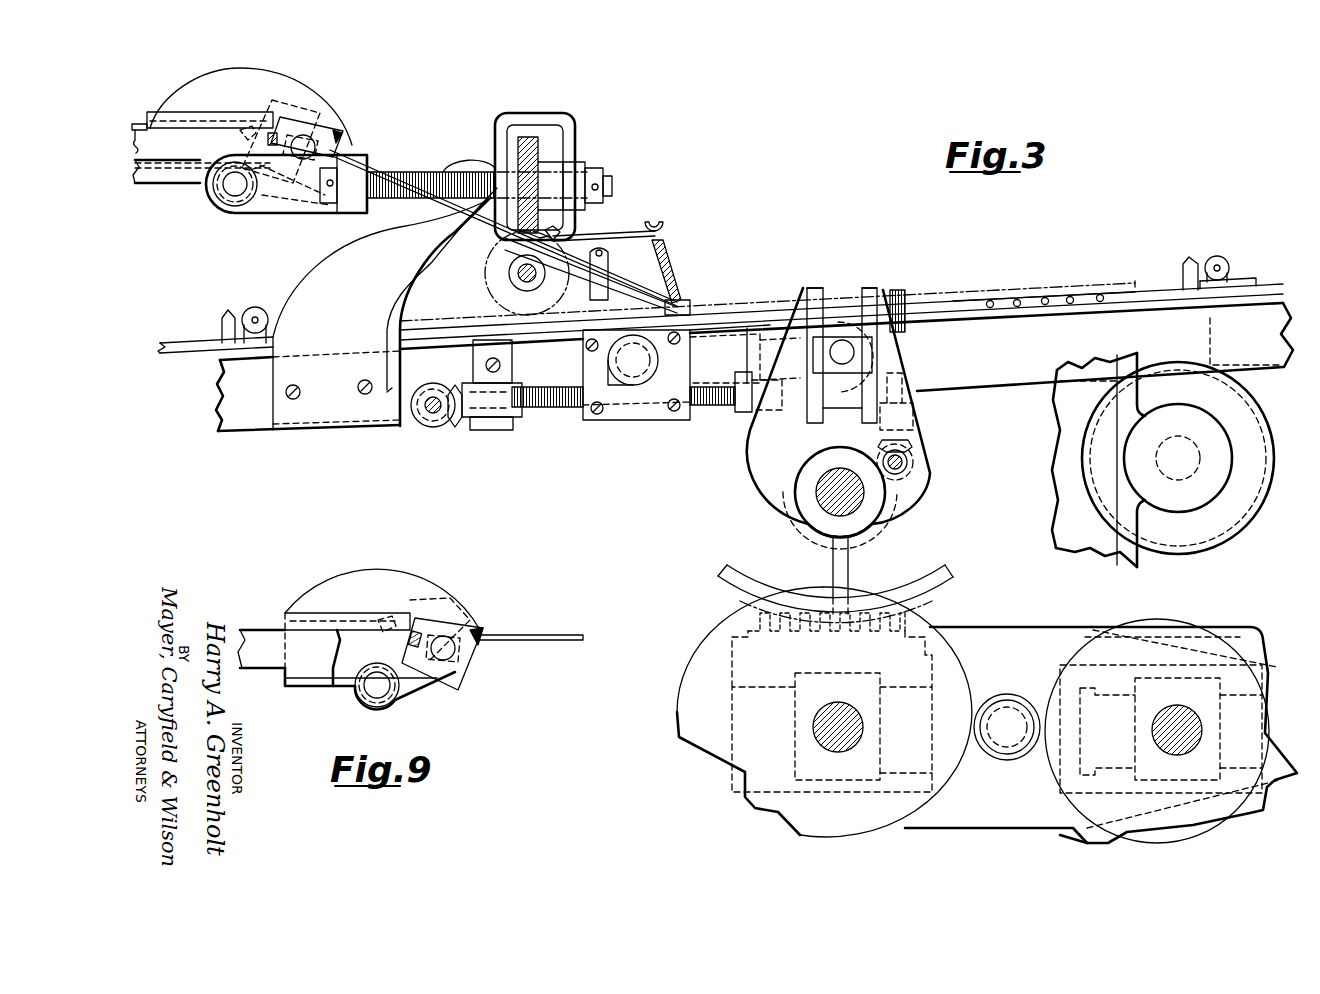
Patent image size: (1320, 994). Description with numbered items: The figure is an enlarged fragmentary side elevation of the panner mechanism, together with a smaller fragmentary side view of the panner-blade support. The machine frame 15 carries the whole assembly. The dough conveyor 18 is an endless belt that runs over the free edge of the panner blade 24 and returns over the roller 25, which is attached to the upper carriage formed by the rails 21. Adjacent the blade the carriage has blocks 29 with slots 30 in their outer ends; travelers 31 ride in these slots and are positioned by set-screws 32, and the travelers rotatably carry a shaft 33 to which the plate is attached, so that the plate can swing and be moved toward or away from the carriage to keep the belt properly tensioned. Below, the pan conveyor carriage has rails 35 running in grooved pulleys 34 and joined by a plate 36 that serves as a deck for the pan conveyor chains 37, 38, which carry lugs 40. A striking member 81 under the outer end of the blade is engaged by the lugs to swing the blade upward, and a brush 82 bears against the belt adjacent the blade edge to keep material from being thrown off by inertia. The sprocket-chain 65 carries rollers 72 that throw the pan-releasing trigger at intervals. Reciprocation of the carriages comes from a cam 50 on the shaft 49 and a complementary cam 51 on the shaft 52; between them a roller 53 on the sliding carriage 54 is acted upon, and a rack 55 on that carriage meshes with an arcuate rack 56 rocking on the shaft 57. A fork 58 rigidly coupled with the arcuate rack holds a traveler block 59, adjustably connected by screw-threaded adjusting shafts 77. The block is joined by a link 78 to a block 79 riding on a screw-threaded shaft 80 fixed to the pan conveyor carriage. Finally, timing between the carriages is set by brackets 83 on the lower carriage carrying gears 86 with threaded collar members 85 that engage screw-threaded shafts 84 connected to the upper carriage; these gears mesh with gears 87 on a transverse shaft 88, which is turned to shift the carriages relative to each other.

In FIG. 3, the frame 15 is at (1098, 460).
In FIG. 3, the conveyor 18 is at (152, 112).
In FIG. 3, the rails 21 is at (160, 185).
In FIG. 9, the rails 21 is at (262, 633).
In FIG. 3, the panner blade 24 is at (662, 276).
In FIG. 9, the panner blade 24 is at (556, 636).
In FIG. 3, the roller 25 is at (225, 202).
In FIG. 9, the roller 25 is at (380, 706).
In FIG. 3, the blocks 29 is at (262, 86).
In FIG. 9, the blocks 29 is at (375, 578).
In FIG. 3, the slots 30 is at (300, 117).
In FIG. 9, the slots 30 is at (424, 618).
In FIG. 3, the travelers 31 is at (308, 145).
In FIG. 9, the travelers 31 is at (452, 640).
In FIG. 3, the set-screws 32 is at (243, 135).
In FIG. 9, the set-screws 32 is at (398, 644).
In FIG. 3, the shaft 33 is at (340, 136).
In FIG. 9, the shaft 33 is at (457, 663).
In FIG. 3, the grooved pulleys 34 is at (1181, 530).
In FIG. 3, the rails 35 is at (754, 367).
In FIG. 3, the plate 36 is at (985, 312).
In FIG. 3, the chain 37 is at (1060, 297).
In FIG. 3, the chain 38 is at (173, 344).
In FIG. 3, the lugs 40 is at (228, 312).
In FIG. 3, the shaft 49 is at (812, 726).
In FIG. 3, the cam 50 is at (692, 668).
In FIG. 3, the complementary cam 51 is at (1190, 628).
In FIG. 3, the shaft 52 is at (1176, 718).
In FIG. 3, the roller 53 is at (1011, 694).
In FIG. 3, the carriage 54 is at (1101, 735).
In FIG. 3, the rack 55 is at (900, 632).
In FIG. 3, the arcuate rack 56 is at (758, 567).
In FIG. 3, the shaft 57 is at (822, 485).
In FIG. 3, the fork 58 is at (812, 288).
In FIG. 3, the traveler block 59 is at (838, 335).
In FIG. 3, the sprocket-chain 65 is at (1258, 289).
In FIG. 3, the rollers 72 is at (262, 300).
In FIG. 3, the screw-threaded adjusting shafts 77 is at (900, 290).
In FIG. 3, the link 78 is at (720, 320).
In FIG. 3, the block 79 is at (648, 412).
In FIG. 3, the screw-threaded shaft 80 is at (550, 410).
In FIG. 3, the striking member 81 is at (590, 302).
In FIG. 3, the brush 82 is at (678, 295).
In FIG. 3, the brackets 83 is at (385, 295).
In FIG. 3, the screw-threaded shafts 84 is at (433, 172).
In FIG. 3, the collar members 85 is at (572, 172).
In FIG. 3, the gears 86 is at (528, 138).
In FIG. 3, the gears 87 is at (494, 298).
In FIG. 3, the shaft 88 is at (527, 283).